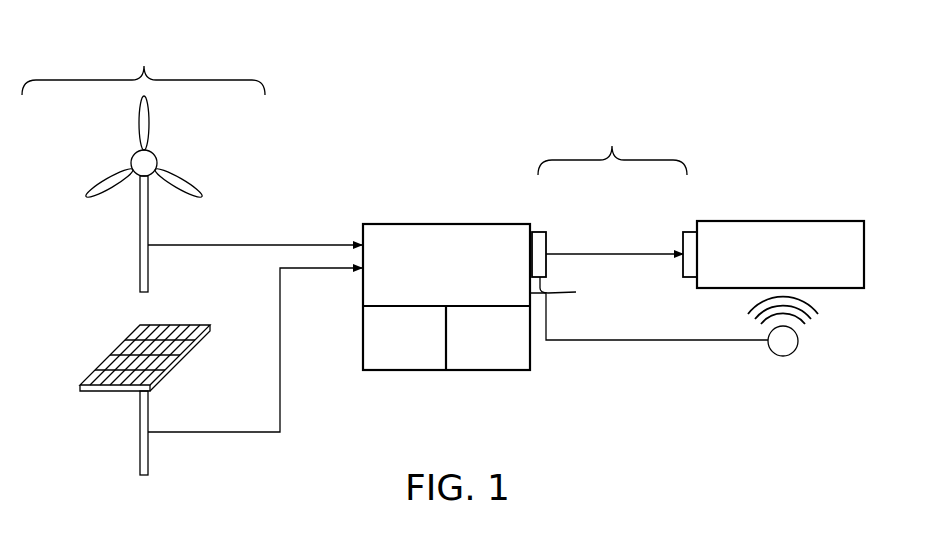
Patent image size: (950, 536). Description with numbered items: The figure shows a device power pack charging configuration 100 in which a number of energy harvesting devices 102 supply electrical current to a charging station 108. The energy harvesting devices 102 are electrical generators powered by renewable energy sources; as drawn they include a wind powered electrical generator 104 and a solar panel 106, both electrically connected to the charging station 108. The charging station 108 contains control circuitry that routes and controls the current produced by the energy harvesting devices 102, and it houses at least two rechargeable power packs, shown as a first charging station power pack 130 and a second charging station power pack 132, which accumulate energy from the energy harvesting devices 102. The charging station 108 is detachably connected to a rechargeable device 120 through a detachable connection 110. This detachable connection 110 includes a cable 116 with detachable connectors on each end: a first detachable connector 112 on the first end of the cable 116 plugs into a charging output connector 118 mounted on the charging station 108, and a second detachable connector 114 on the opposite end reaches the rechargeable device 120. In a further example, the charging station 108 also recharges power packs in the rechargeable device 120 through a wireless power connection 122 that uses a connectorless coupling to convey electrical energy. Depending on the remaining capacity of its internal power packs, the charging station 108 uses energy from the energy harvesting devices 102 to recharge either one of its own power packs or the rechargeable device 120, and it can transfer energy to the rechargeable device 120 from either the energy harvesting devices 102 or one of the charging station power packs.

The device power pack charging configuration 100 is at (566, 502).
The energy harvesting devices 102 is at (143, 256).
The wind powered electrical generator 104 is at (140, 242).
The solar panel 106 is at (140, 437).
The charging station 108 is at (452, 224).
The detachable connection 110 is at (618, 212).
The first detachable connector 112 is at (580, 291).
The second detachable connector 114 is at (690, 232).
The cable 116 is at (638, 256).
The charging output connector 118 is at (538, 232).
The rechargeable device 120 is at (782, 221).
The wireless power connection 122 is at (798, 342).
The first charging station power pack 130 is at (403, 372).
The second charging station power pack 132 is at (488, 372).